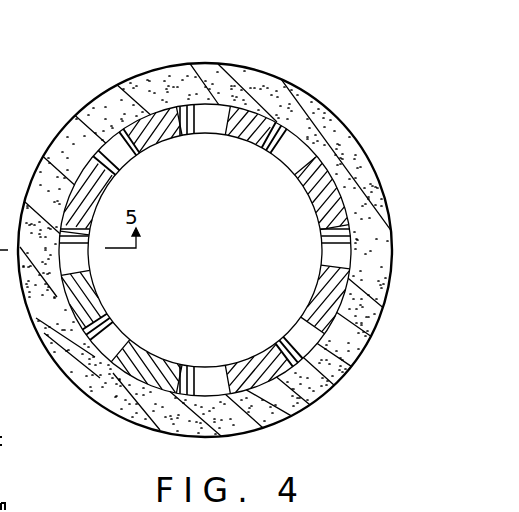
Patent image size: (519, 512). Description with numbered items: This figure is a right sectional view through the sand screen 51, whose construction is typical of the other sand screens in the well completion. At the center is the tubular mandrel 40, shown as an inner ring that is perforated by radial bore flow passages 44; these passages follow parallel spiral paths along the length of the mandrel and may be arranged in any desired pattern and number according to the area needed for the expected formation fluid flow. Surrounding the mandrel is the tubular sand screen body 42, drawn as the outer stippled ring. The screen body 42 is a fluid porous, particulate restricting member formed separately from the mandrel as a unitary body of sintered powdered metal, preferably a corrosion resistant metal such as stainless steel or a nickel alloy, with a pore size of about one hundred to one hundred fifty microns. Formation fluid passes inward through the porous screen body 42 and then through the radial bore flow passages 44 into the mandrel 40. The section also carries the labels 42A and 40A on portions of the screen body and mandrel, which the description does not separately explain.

The sand screen 51 is at (281, 64).
The tubular sand screen body 42 is at (90, 100).
The outer layer segment 42A is at (302, 346).
The tubular mandrel 40 is at (166, 137).
The inner ring segment 40A is at (262, 340).
The radial bore flow passages 44 is at (298, 166).